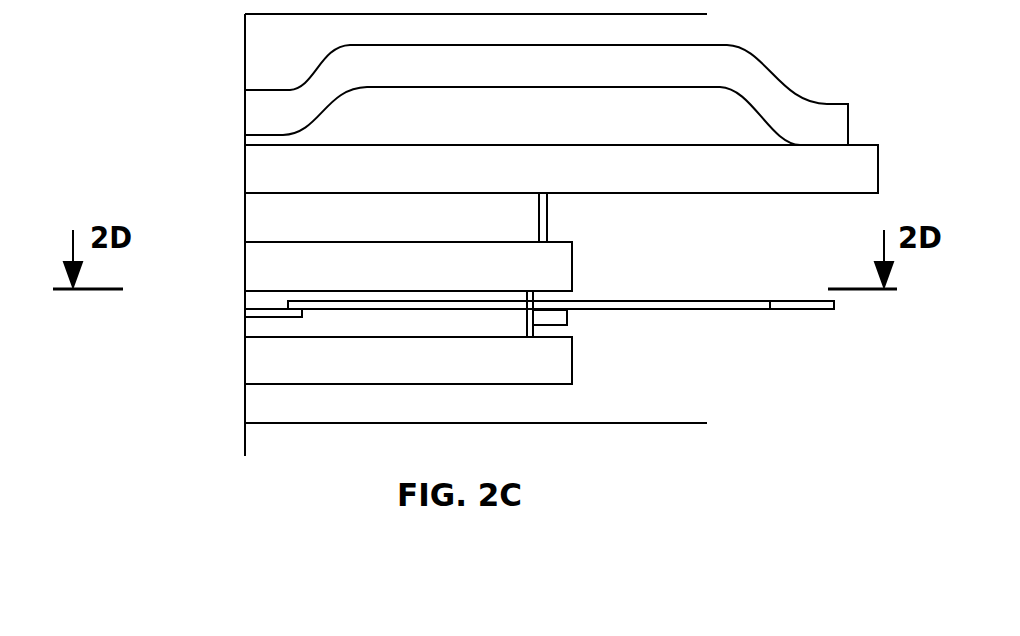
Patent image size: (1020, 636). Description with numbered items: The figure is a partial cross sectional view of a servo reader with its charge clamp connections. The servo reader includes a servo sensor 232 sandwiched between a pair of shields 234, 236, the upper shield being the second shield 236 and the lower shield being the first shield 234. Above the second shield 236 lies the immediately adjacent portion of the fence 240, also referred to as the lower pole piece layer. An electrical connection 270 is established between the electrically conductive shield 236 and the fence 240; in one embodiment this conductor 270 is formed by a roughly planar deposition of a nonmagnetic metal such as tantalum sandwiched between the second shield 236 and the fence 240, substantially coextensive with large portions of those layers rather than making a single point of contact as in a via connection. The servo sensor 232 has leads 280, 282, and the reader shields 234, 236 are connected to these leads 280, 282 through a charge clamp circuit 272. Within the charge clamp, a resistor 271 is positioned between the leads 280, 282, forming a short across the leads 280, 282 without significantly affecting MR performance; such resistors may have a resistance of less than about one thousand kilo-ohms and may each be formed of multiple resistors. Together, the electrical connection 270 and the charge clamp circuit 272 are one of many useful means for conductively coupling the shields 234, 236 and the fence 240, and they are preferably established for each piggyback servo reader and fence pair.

The fence 240 is at (245, 167).
The electrical connection 270 is at (547, 210).
The shield 236 is at (245, 265).
The servo sensor 232 is at (245, 313).
The shield 234 is at (245, 360).
The lead 280 is at (733, 301).
The lead 282 is at (806, 301).
The charge clamp circuit 272 is at (527, 330).
The resistor 271 is at (567, 312).